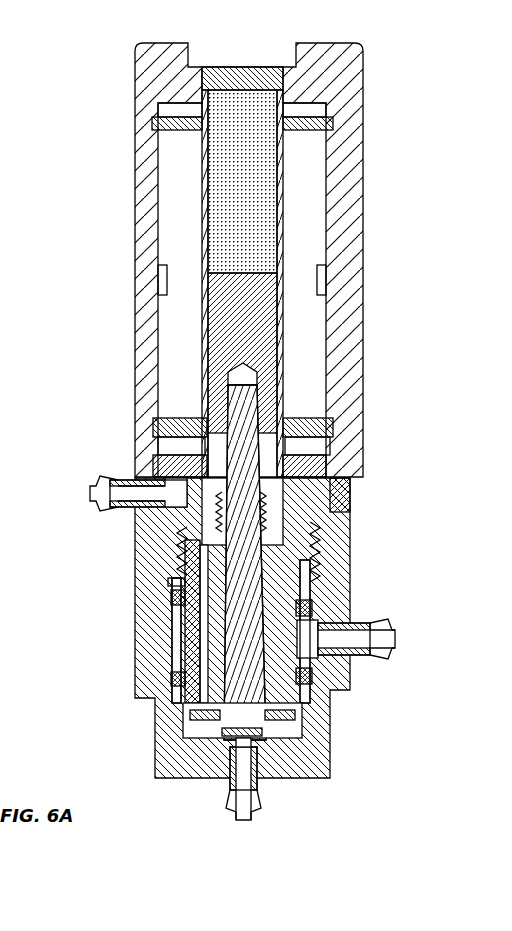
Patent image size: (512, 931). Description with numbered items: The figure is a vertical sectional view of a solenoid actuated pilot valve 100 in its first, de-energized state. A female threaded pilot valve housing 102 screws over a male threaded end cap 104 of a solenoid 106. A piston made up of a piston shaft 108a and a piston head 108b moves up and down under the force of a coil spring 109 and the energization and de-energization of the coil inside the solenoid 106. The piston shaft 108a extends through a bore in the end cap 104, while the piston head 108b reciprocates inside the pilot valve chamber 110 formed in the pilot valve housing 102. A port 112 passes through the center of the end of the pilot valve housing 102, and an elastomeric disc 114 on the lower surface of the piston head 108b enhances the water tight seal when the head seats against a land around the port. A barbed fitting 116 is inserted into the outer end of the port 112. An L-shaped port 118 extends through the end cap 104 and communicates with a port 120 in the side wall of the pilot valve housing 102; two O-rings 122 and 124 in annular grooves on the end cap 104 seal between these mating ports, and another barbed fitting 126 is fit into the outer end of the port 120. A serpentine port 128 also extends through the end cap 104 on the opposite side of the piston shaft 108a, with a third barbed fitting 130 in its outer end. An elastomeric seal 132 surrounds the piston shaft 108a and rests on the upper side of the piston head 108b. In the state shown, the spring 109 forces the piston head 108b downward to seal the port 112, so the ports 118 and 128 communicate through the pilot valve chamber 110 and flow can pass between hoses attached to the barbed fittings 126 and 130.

The alternate embodiment 100 is at (262, 442).
The pilot valve housing 102 is at (335, 713).
The end cap 104 is at (348, 497).
The solenoid 106 is at (363, 335).
The piston shaft 108a is at (228, 395).
The piston head 108b is at (295, 735).
The coil spring 109 is at (214, 522).
The pilot valve chamber 110 is at (205, 730).
The port 112 is at (235, 748).
The elastomeric disc 114 is at (240, 735).
The barbed fitting 116 is at (262, 810).
The L-shaped port 118 is at (310, 655).
The port 120 is at (311, 608).
The O-ring 122 is at (315, 598).
The O-ring 124 is at (323, 688).
The barbed fitting 126 is at (390, 625).
The serpentine port 128 is at (178, 613).
The barbed fitting 130 is at (118, 480).
The elastomeric seal 132 is at (190, 712).